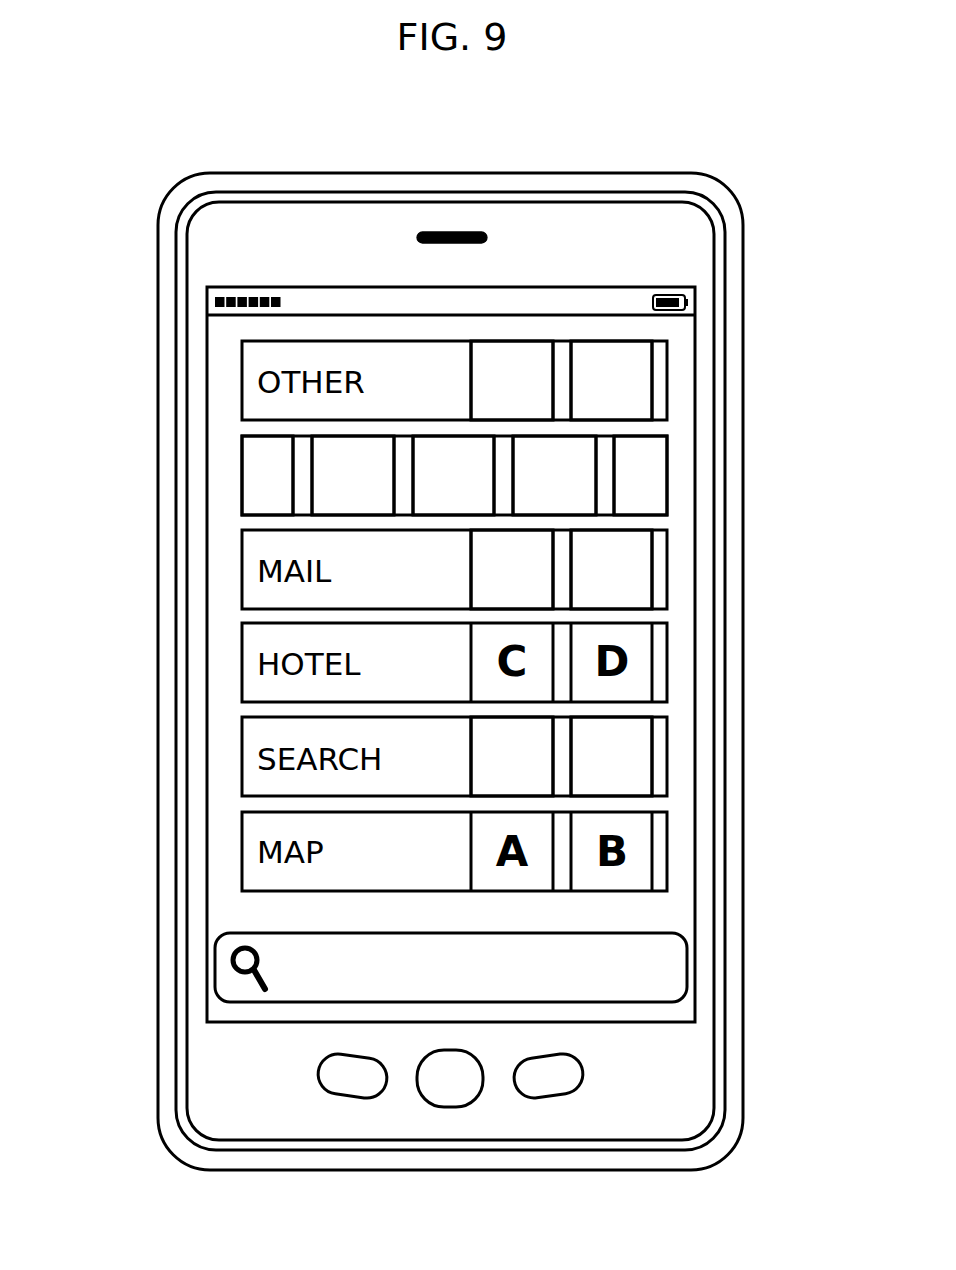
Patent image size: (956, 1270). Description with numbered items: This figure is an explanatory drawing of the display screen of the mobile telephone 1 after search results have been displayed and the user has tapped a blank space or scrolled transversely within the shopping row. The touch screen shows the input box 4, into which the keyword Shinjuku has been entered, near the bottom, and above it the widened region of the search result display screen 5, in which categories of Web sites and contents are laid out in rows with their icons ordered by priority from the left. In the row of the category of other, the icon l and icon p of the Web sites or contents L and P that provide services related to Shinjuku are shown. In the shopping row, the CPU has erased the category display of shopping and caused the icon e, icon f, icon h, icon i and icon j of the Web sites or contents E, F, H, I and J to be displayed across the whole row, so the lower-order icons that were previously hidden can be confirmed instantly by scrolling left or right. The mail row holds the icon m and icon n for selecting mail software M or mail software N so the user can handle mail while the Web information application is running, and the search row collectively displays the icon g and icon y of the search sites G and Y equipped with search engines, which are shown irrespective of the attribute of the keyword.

The mobile telephone 1 is at (440, 135).
The input box 4 is at (665, 973).
The search result display screen 5 is at (410, 323).
The icon l is at (482, 385).
The icon p is at (640, 387).
The icon e is at (250, 503).
The icon f is at (323, 475).
The icon h is at (425, 452).
The icon i is at (578, 452).
The icon j is at (653, 505).
The icon m is at (482, 575).
The icon n is at (640, 575).
The icon g is at (482, 762).
The icon y is at (640, 762).